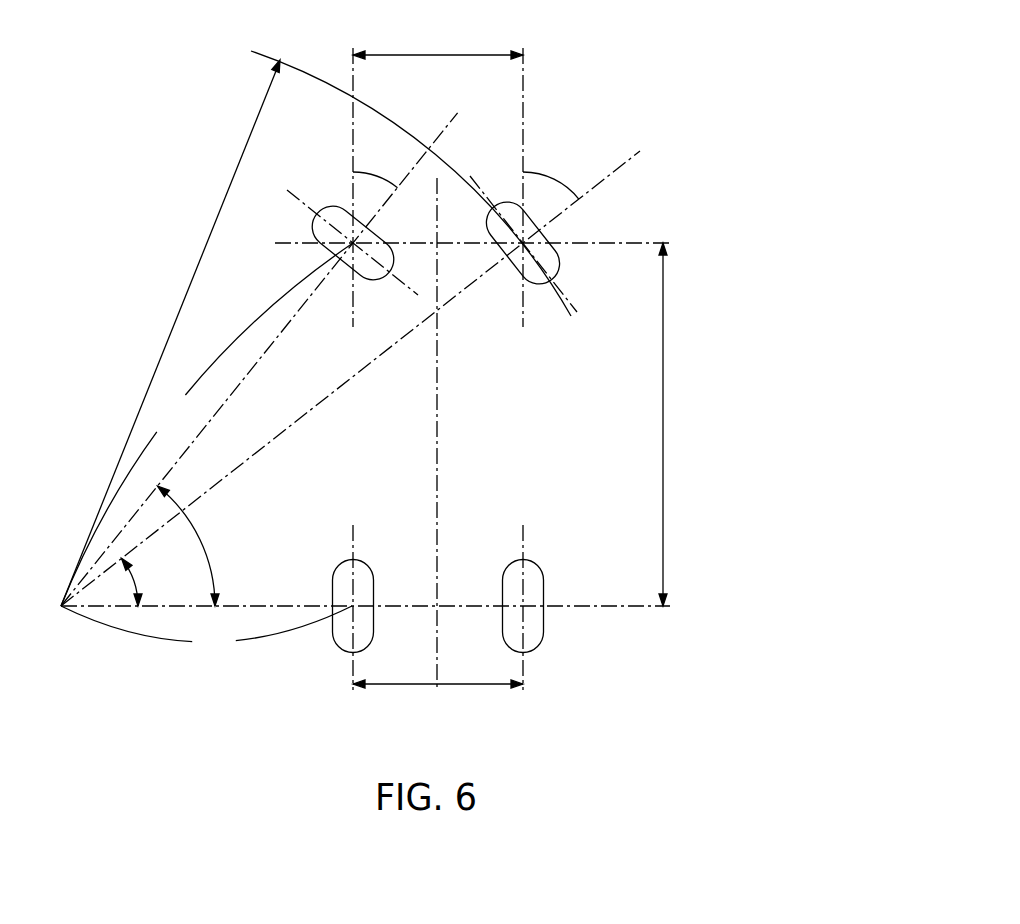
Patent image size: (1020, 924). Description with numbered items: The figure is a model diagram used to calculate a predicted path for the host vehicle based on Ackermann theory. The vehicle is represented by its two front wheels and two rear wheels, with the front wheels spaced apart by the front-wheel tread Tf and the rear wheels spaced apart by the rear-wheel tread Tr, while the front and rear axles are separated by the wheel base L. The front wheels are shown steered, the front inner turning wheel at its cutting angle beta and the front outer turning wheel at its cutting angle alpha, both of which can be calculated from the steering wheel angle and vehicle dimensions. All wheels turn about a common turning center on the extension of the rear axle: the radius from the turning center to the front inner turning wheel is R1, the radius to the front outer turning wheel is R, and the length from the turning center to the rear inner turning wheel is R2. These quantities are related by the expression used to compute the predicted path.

The radius from turning center to front outer turning wheel R is at (316, 328).
The radius from turning center to front inner turning wheel R1 is at (259, 359).
The length from turning center to rear inner turning wheel R2 is at (350, 404).
The wheel base L is at (672, 424).
The front-wheel tread Tf is at (438, 43).
The rear-wheel tread Tr is at (438, 700).